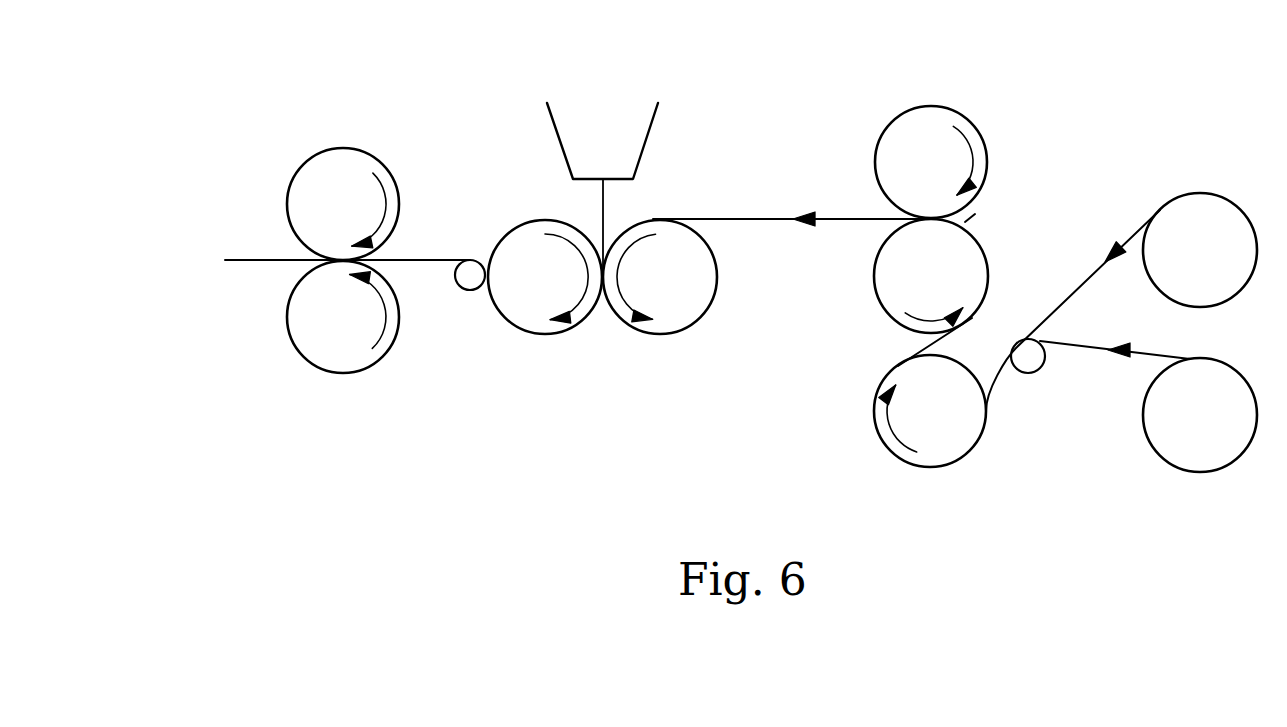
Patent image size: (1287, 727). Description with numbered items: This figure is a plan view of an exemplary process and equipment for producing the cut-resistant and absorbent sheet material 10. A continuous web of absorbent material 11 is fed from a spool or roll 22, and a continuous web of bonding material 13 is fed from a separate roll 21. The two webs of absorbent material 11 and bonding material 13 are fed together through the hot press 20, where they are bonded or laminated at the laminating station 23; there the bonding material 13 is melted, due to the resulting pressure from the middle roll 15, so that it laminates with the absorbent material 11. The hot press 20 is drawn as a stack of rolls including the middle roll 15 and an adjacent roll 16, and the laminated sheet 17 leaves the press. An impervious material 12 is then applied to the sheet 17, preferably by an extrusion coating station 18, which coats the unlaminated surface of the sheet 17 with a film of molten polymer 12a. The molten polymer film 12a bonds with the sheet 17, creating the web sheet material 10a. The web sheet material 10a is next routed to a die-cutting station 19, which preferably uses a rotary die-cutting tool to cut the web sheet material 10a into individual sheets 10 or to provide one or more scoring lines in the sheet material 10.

The sheet material 10 is at (263, 263).
The web sheet material 10a is at (412, 262).
The absorbent material 11 is at (1052, 308).
The impervious material 12 is at (598, 140).
The molten polymer film 12a is at (605, 225).
The bonding material 13 is at (1107, 348).
The middle roll 15 is at (943, 258).
The laminating roller 16 is at (907, 137).
The sheet 17 is at (732, 217).
The extrusion coating station 18 is at (600, 318).
The die-cutting station 19 is at (347, 383).
The hot press 20 is at (966, 248).
The roll 21 is at (1182, 453).
The roll 22 is at (1245, 237).
The laminating station 23 is at (973, 215).